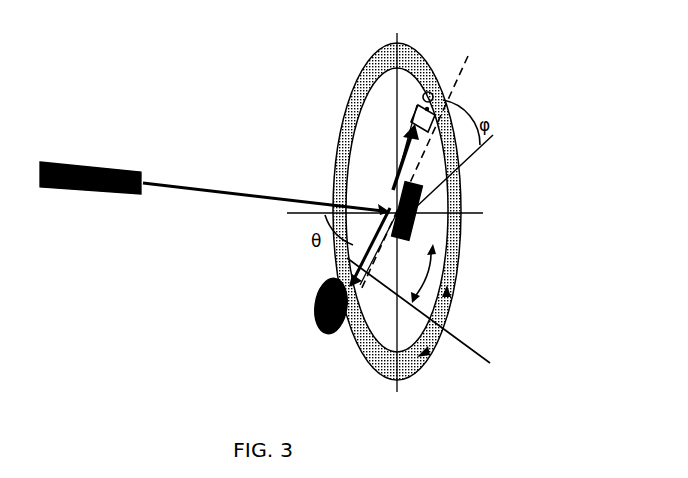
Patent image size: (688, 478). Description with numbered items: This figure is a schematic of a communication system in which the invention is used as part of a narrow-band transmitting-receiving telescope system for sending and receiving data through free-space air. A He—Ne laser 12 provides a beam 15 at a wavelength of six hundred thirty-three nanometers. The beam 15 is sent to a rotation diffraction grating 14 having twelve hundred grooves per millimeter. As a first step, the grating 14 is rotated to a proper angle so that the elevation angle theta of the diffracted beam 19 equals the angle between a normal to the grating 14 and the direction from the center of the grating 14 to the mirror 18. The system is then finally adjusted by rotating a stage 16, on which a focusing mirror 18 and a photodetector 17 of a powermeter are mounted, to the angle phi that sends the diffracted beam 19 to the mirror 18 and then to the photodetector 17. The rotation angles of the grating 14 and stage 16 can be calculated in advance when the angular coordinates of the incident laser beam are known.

The He—Ne laser 12 is at (90, 168).
The rotation diffraction grating 14 is at (418, 209).
The beam 15 is at (266, 194).
The stage 16 is at (374, 211).
The photodetector 17 is at (436, 100).
The focusing mirror 18 is at (335, 272).
The diffracted beam 19 is at (433, 312).